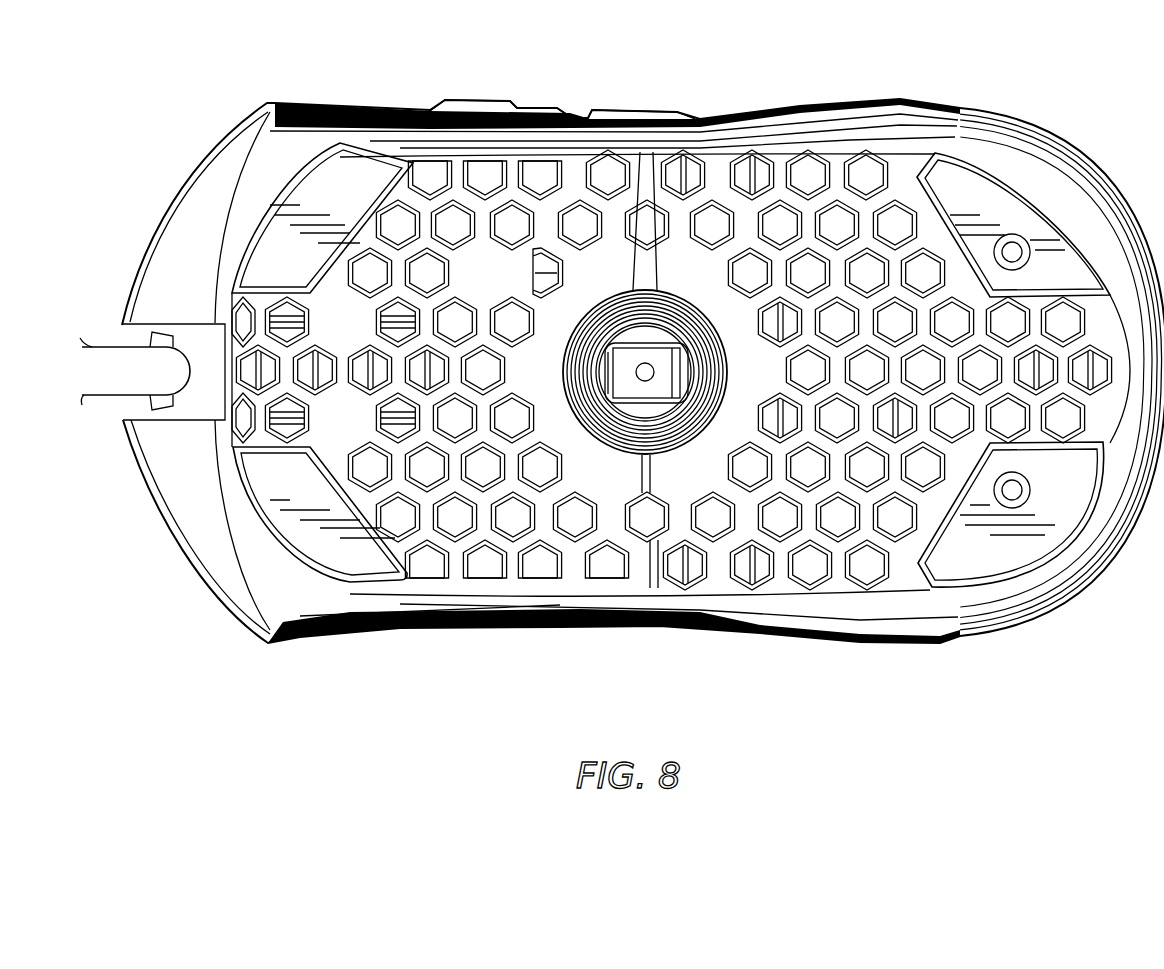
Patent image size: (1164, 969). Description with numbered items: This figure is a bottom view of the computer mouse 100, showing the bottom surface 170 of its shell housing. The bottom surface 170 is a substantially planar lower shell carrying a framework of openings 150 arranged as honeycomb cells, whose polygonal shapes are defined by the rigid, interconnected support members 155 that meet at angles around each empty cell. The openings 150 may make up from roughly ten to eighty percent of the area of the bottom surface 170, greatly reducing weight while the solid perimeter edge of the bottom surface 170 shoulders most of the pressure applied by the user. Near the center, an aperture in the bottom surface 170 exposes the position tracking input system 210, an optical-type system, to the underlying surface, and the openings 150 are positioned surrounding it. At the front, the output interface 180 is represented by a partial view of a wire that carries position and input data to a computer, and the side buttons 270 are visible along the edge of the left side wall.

The computer mouse 100 is at (1106, 122).
The openings 150 is at (863, 573).
The support members 155 is at (718, 197).
The bottom surface 170 is at (717, 590).
The output interface 180 is at (113, 387).
The position tracking input system 210 is at (635, 342).
The side buttons 270 is at (498, 102).